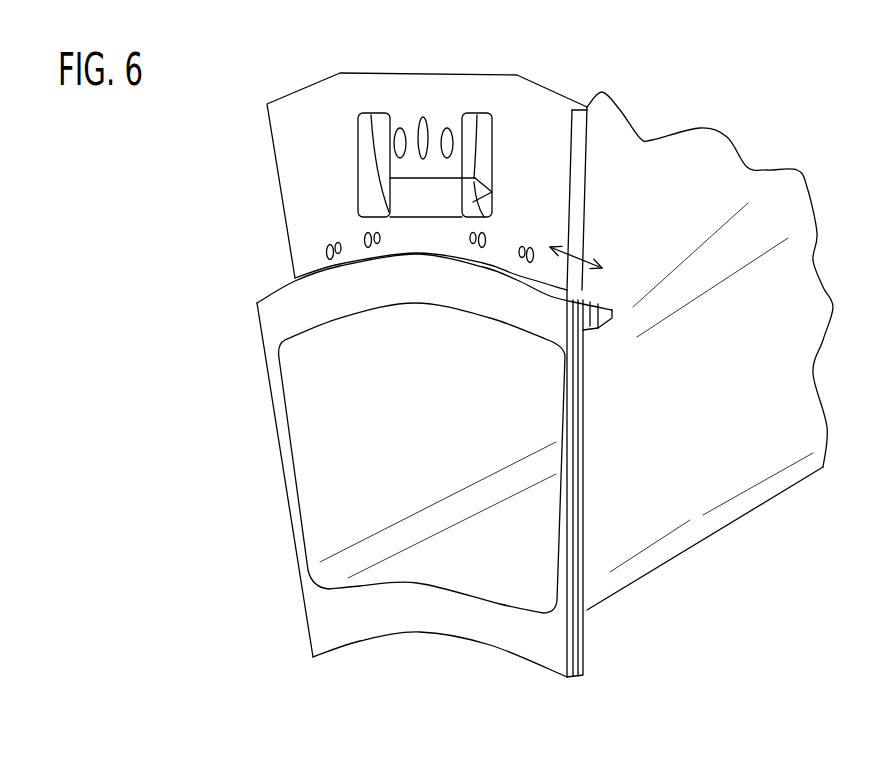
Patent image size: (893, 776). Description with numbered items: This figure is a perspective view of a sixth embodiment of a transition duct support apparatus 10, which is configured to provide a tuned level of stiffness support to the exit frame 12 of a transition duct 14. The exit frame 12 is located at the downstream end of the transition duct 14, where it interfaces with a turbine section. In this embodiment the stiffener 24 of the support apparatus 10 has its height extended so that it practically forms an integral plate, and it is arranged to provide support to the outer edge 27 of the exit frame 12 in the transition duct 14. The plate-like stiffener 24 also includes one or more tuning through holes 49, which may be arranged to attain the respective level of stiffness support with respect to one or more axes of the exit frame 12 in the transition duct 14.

The transition duct support apparatus 10 is at (247, 162).
The exit frame 12 is at (282, 480).
The transition duct 14 is at (732, 395).
The stiffener 24 is at (313, 202).
The outer edge 27 is at (508, 272).
The tuning through holes 49 is at (367, 113).